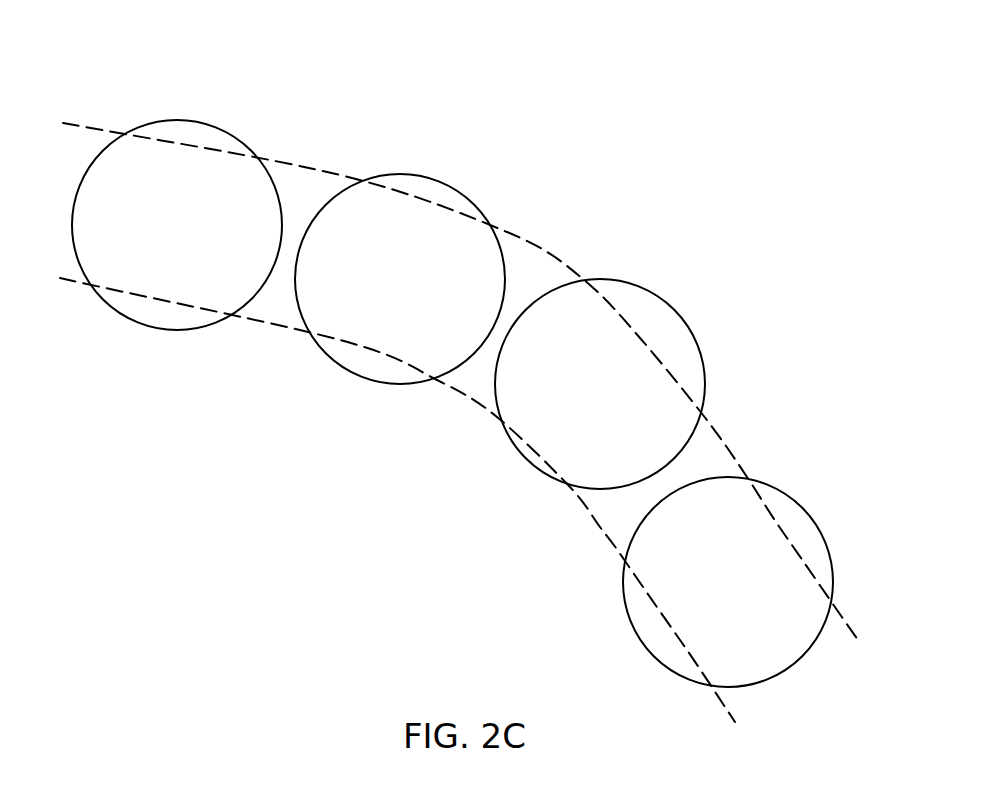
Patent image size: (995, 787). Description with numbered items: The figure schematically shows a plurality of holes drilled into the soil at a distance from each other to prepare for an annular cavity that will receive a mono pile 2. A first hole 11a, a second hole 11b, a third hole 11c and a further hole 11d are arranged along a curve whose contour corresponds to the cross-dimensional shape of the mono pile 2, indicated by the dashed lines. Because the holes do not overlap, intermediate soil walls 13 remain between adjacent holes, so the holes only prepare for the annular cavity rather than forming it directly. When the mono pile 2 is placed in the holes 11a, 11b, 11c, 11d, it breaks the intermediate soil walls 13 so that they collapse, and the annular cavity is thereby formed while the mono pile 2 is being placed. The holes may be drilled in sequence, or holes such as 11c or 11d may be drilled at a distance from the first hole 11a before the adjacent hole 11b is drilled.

The mono pile 2 is at (507, 232).
The first hole 11a is at (147, 266).
The second hole 11b is at (390, 330).
The third hole 11c is at (553, 385).
The hole 11d is at (667, 583).
The intermediate soil walls 13 is at (295, 212).